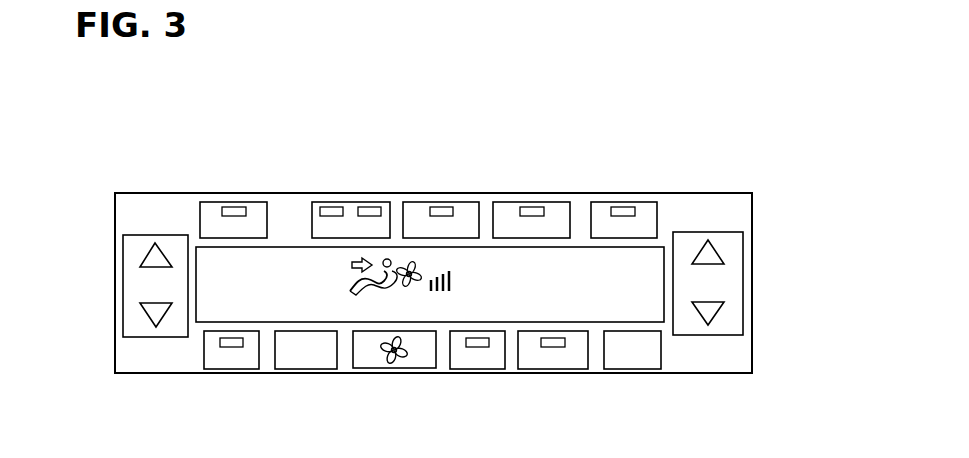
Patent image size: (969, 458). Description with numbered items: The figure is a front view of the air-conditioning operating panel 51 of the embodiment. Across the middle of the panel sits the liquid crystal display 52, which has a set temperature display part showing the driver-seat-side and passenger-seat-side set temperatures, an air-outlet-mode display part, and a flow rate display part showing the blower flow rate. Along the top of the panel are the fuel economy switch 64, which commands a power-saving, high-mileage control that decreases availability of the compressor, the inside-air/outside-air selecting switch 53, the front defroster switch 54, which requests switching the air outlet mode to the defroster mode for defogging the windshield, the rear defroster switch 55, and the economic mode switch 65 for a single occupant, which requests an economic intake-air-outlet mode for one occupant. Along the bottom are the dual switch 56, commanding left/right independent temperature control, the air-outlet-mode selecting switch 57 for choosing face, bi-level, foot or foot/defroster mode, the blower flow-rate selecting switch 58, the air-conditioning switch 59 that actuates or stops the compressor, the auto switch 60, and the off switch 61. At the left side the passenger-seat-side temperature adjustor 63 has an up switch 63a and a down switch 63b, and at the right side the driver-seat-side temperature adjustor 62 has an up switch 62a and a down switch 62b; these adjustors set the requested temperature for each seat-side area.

The air-conditioning operating panel 51 is at (156, 207).
The liquid crystal display 52 is at (288, 270).
The inside-air/outside-air selecting switch 53 is at (350, 207).
The front defroster switch 54 is at (441, 207).
The rear defroster switch 55 is at (532, 207).
The dual switch 56 is at (232, 370).
The air-outlet-mode selecting switch 57 is at (306, 370).
The blower flow-rate selecting switch 58 is at (395, 370).
The air-conditioning switch 59 is at (478, 370).
The auto switch 60 is at (555, 370).
The off switch 61 is at (634, 370).
The driver-seat-side temperature adjustor 62 is at (761, 283).
The up switch 62a is at (716, 253).
The down switch 62b is at (716, 310).
The passenger-seat-side temperature adjustor 63 is at (105, 286).
The up switch 63a is at (143, 258).
The down switch 63b is at (145, 316).
The fuel economy switch 64 is at (231, 207).
The economic mode switch for a single occupant 65 is at (622, 207).